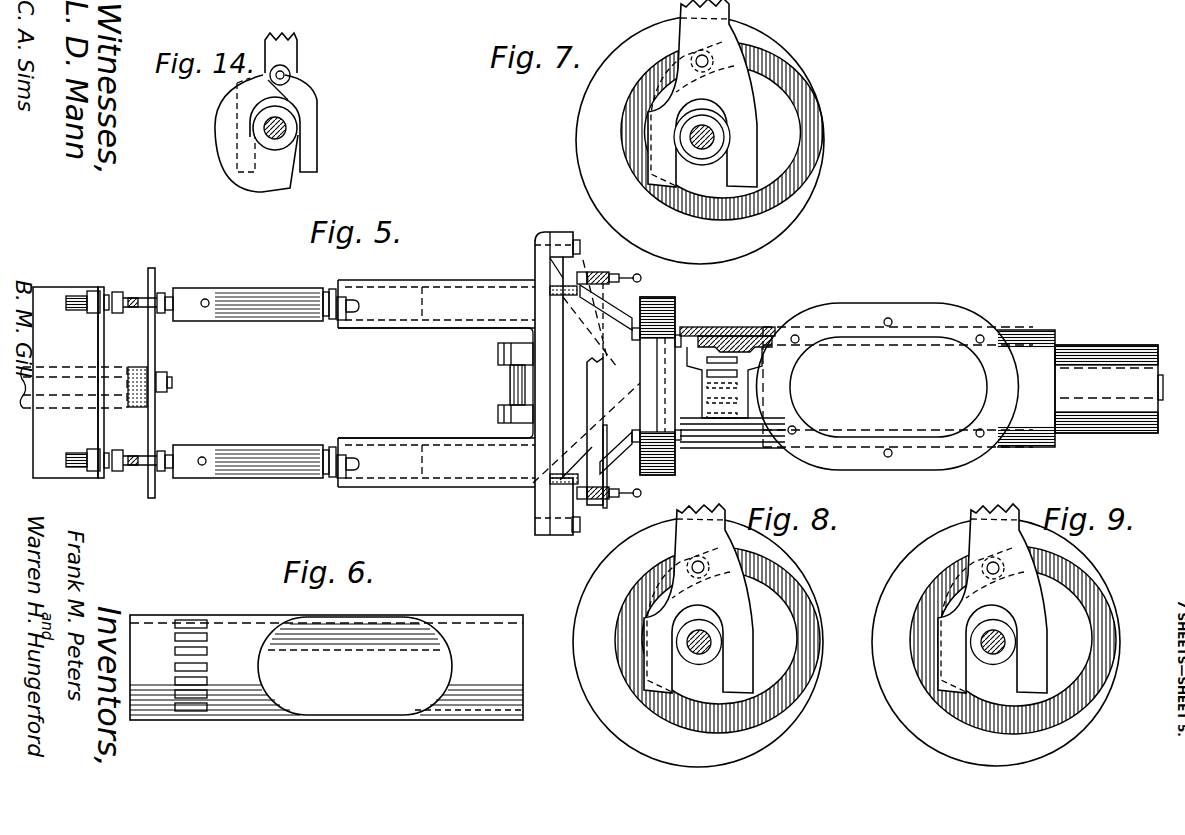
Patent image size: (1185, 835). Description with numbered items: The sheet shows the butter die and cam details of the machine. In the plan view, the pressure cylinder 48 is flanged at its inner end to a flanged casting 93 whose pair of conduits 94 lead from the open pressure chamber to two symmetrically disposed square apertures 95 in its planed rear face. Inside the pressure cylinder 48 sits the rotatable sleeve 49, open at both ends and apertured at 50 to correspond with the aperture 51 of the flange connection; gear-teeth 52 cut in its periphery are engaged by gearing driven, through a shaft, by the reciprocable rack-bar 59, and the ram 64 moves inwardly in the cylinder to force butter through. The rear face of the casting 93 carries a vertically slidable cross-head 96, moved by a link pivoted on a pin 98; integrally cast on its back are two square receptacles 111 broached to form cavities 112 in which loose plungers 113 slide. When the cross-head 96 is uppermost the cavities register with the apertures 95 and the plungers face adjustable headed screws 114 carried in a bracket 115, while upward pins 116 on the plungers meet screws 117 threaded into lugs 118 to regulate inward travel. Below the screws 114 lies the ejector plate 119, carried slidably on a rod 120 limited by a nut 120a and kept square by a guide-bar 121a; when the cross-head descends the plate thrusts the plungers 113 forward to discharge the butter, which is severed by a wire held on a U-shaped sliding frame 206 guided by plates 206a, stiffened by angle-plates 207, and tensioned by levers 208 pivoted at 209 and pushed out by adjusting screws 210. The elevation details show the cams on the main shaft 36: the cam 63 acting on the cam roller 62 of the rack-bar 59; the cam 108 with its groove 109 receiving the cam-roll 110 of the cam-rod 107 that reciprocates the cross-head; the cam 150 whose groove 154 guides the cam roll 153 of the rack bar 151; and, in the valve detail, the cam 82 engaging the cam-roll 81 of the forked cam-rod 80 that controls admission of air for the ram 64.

In FIG. 7, the main shaft 36 is at (693, 143).
In FIG. 8, the main shaft 36 is at (698, 657).
In FIG. 9, the main shaft 36 is at (992, 657).
In FIG. 14, the main shaft 36 is at (290, 128).
In FIG. 5, the pressure cylinder 48 is at (1033, 363).
In FIG. 5, the rotatable sleeve 49 is at (750, 330).
In FIG. 6, the rotatable sleeve 49 is at (478, 623).
In FIG. 6, the aperture 50 is at (320, 695).
In FIG. 5, the aperture 51 is at (958, 345).
In FIG. 5, the gear-teeth 52 is at (714, 357).
In FIG. 6, the gear-teeth 52 is at (193, 703).
In FIG. 5, the rack-bar 59 is at (679, 399).
In FIG. 8, the rack-bar 59 is at (707, 513).
In FIG. 8, the cam roller 62 is at (690, 565).
In FIG. 8, the cam 63 is at (785, 560).
In FIG. 5, the ram 64 is at (1100, 360).
In FIG. 14, the cam-rod 80 is at (290, 50).
In FIG. 14, the cam-roll 81 is at (293, 75).
In FIG. 14, the cam 82 is at (225, 123).
In FIG. 5, the flanged casting 93 is at (640, 386).
In FIG. 5, the conduits 94 is at (625, 323).
In FIG. 5, the apertures 95 is at (557, 303).
In FIG. 5, the cross-head 96 is at (547, 232).
In FIG. 5, the pin 98 is at (498, 375).
In FIG. 7, the cam-rod 107 is at (695, 20).
In FIG. 7, the cam 108 is at (790, 216).
In FIG. 7, the groove 109 is at (813, 167).
In FIG. 7, the cam-roll 110 is at (710, 62).
In FIG. 5, the receptacles 111 is at (392, 320).
In FIG. 5, the cavities 112 is at (442, 300).
In FIG. 5, the plungers 113 is at (240, 322).
In FIG. 5, the adjustable headed screws 114 is at (163, 293).
In FIG. 5, the bracket 115 is at (105, 336).
In FIG. 5, the pins 116 is at (208, 300).
In FIG. 5, the adjustable headed screws 117 is at (325, 322).
In FIG. 5, the lugs 118 is at (345, 322).
In FIG. 5, the ejector plate 119 is at (157, 360).
In FIG. 5, the rod 120 is at (18, 385).
In FIG. 5, the nut 120a is at (163, 378).
In FIG. 5, the guide-bar 121a is at (108, 410).
In FIG. 9, the cam 150 is at (1090, 575).
In FIG. 9, the rack bar 151 is at (992, 513).
In FIG. 9, the cam roll 153 is at (985, 567).
In FIG. 9, the groove 154 is at (1097, 627).
In FIG. 5, the frame 206 is at (532, 483).
In FIG. 5, the plates 206a is at (560, 480).
In FIG. 5, the angle-plates 207 is at (605, 500).
In FIG. 5, the levers 208 is at (606, 273).
In FIG. 5, the pivot 209 is at (597, 270).
In FIG. 5, the adjusting screws 210 is at (641, 279).